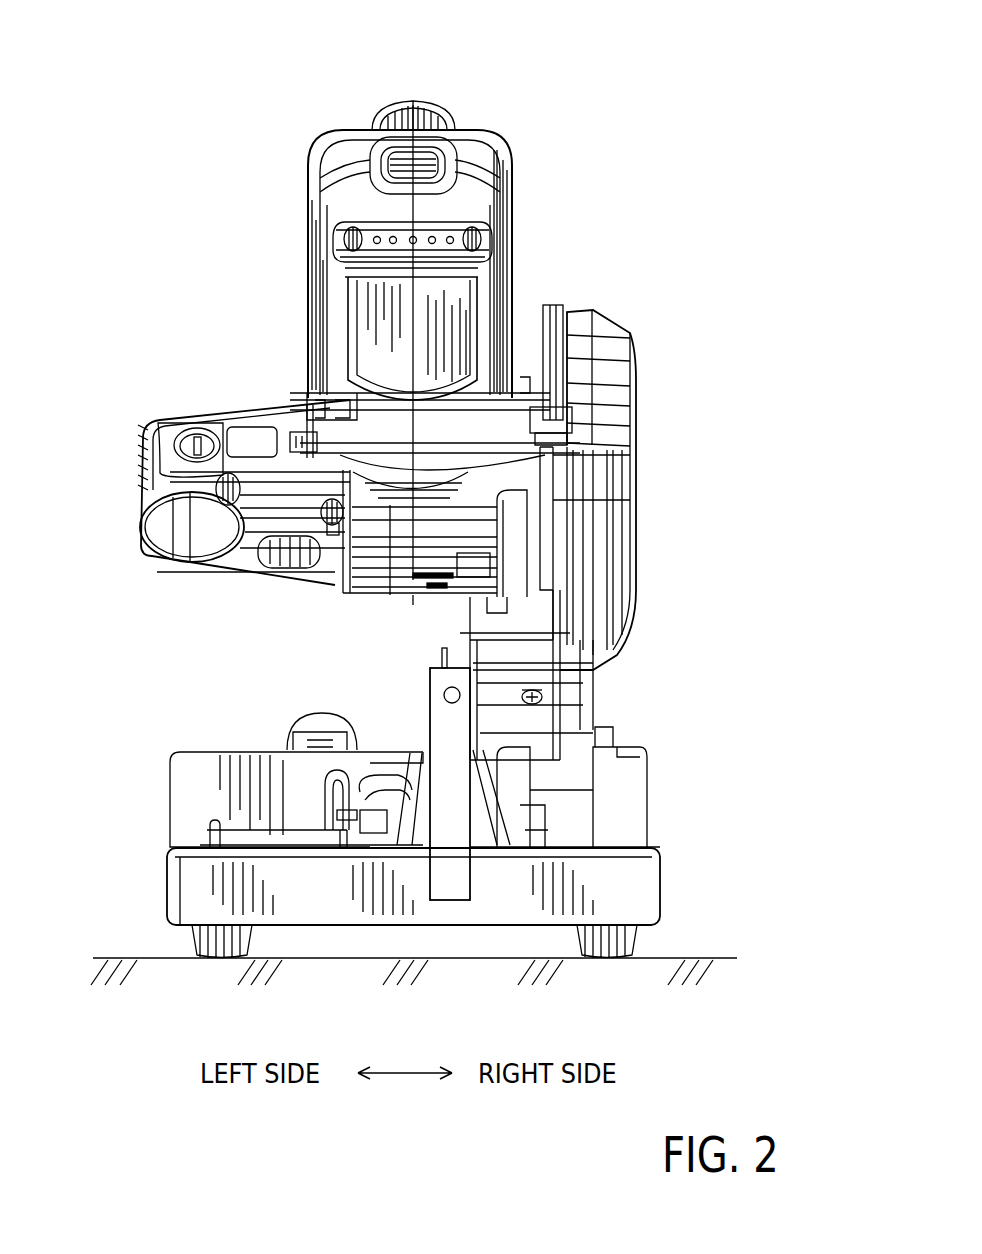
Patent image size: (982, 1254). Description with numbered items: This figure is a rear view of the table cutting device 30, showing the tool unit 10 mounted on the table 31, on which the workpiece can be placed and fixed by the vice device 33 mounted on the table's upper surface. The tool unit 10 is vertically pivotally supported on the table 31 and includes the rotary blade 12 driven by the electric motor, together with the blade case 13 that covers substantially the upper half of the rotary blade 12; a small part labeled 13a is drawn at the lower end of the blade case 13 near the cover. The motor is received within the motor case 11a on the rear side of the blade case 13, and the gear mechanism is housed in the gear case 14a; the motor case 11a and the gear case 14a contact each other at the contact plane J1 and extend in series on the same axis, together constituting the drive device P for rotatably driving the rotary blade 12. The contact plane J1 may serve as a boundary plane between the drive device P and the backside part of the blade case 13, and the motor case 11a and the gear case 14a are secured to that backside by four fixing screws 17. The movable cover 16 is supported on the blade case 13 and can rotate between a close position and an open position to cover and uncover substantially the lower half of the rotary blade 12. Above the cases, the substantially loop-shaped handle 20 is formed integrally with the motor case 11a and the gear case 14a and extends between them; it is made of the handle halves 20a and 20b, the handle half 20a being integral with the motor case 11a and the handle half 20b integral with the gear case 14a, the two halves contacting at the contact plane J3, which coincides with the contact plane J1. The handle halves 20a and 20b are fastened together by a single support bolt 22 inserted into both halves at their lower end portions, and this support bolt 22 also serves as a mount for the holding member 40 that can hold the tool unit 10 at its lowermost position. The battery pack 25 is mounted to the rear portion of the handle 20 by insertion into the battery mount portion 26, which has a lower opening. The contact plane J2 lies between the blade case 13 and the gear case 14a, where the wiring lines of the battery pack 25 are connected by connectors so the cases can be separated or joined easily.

The tool unit 10 is at (218, 336).
The handle 20 is at (516, 128).
The handle half 20a is at (388, 118).
The handle half 20b is at (440, 118).
The contact plane J3 is at (413, 105).
The battery mount portion 26 is at (372, 152).
The battery pack 25 is at (375, 328).
The contact plane J2 is at (500, 330).
The blade case 13 is at (612, 330).
The table cutting device 30 is at (644, 350).
The movable cover 16 is at (588, 540).
The motor case 11a is at (210, 570).
The fixing screws 17 is at (158, 520).
The support bolt 22 is at (290, 432).
The gear case 14a is at (433, 550).
The contact plane J1 is at (383, 550).
The drive device P is at (416, 604).
The rotary blade 12 is at (617, 670).
The screw 13a is at (545, 690).
The vice device 33 is at (485, 840).
The holding member 40 is at (330, 798).
The table 31 is at (195, 892).